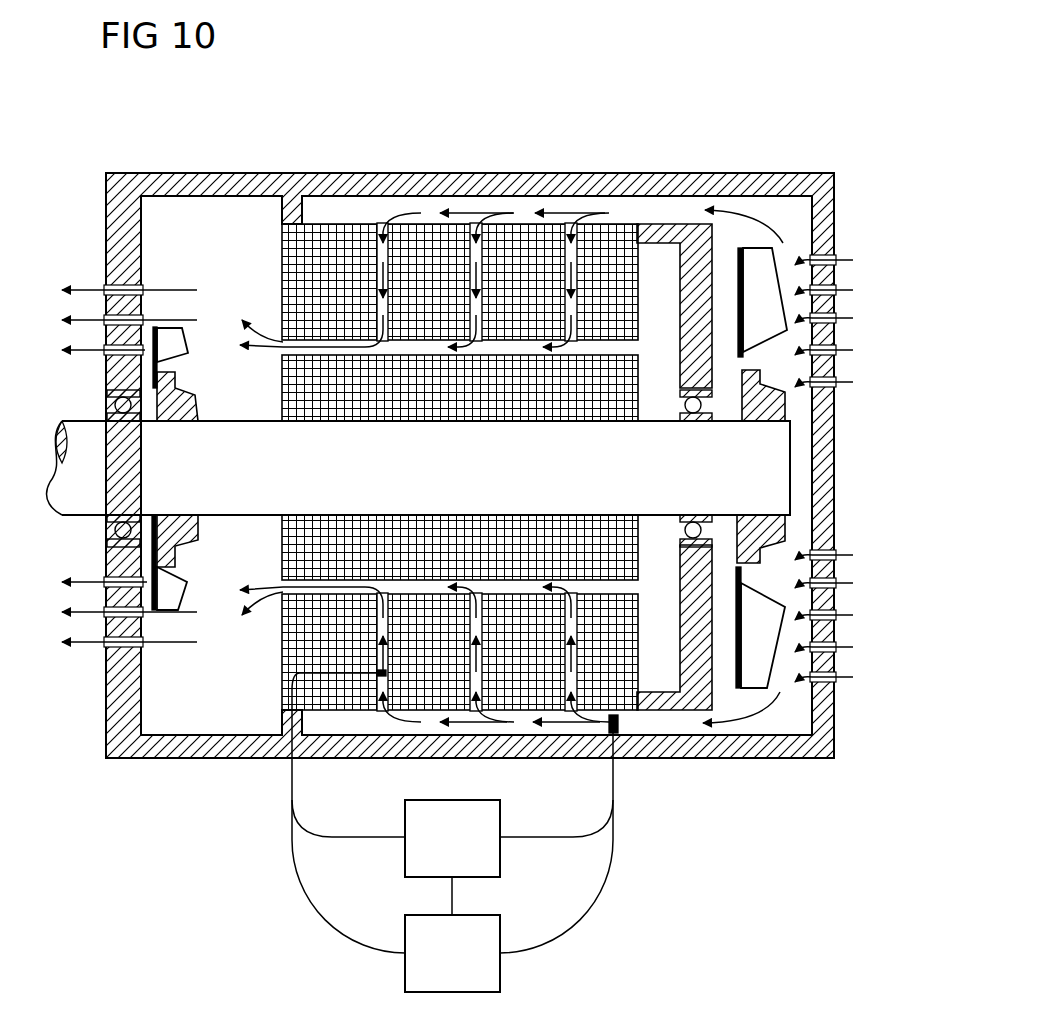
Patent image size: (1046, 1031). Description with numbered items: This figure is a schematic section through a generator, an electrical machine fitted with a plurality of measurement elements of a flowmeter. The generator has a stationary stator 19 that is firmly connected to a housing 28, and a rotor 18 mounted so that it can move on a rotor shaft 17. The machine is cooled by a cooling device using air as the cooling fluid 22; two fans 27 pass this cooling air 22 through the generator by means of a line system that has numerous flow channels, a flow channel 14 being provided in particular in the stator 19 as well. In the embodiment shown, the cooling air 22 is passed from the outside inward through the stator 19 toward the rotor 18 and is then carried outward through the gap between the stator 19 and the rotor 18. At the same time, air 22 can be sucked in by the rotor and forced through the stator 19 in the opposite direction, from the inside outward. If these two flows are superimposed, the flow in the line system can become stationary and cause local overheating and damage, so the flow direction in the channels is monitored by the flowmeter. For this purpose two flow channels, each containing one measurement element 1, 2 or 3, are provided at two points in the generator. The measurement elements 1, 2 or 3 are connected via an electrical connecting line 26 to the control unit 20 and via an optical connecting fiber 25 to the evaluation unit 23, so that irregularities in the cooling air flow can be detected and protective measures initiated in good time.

The measurement element 1 is at (455, 755).
The measurement element 2 is at (381, 673).
The measurement element 3 is at (613, 724).
The flow channel 14 is at (388, 248).
The rotor shaft 17 is at (100, 490).
The rotor 18 is at (607, 383).
The stator 19 is at (325, 247).
The control unit 20 is at (437, 854).
The cooling fluid 22 is at (85, 348).
The evaluation unit 23 is at (437, 969).
The optical connecting fiber 25 is at (328, 927).
The electrical connecting line 26 is at (330, 838).
The fan 27 is at (180, 342).
The housing 28 is at (763, 183).